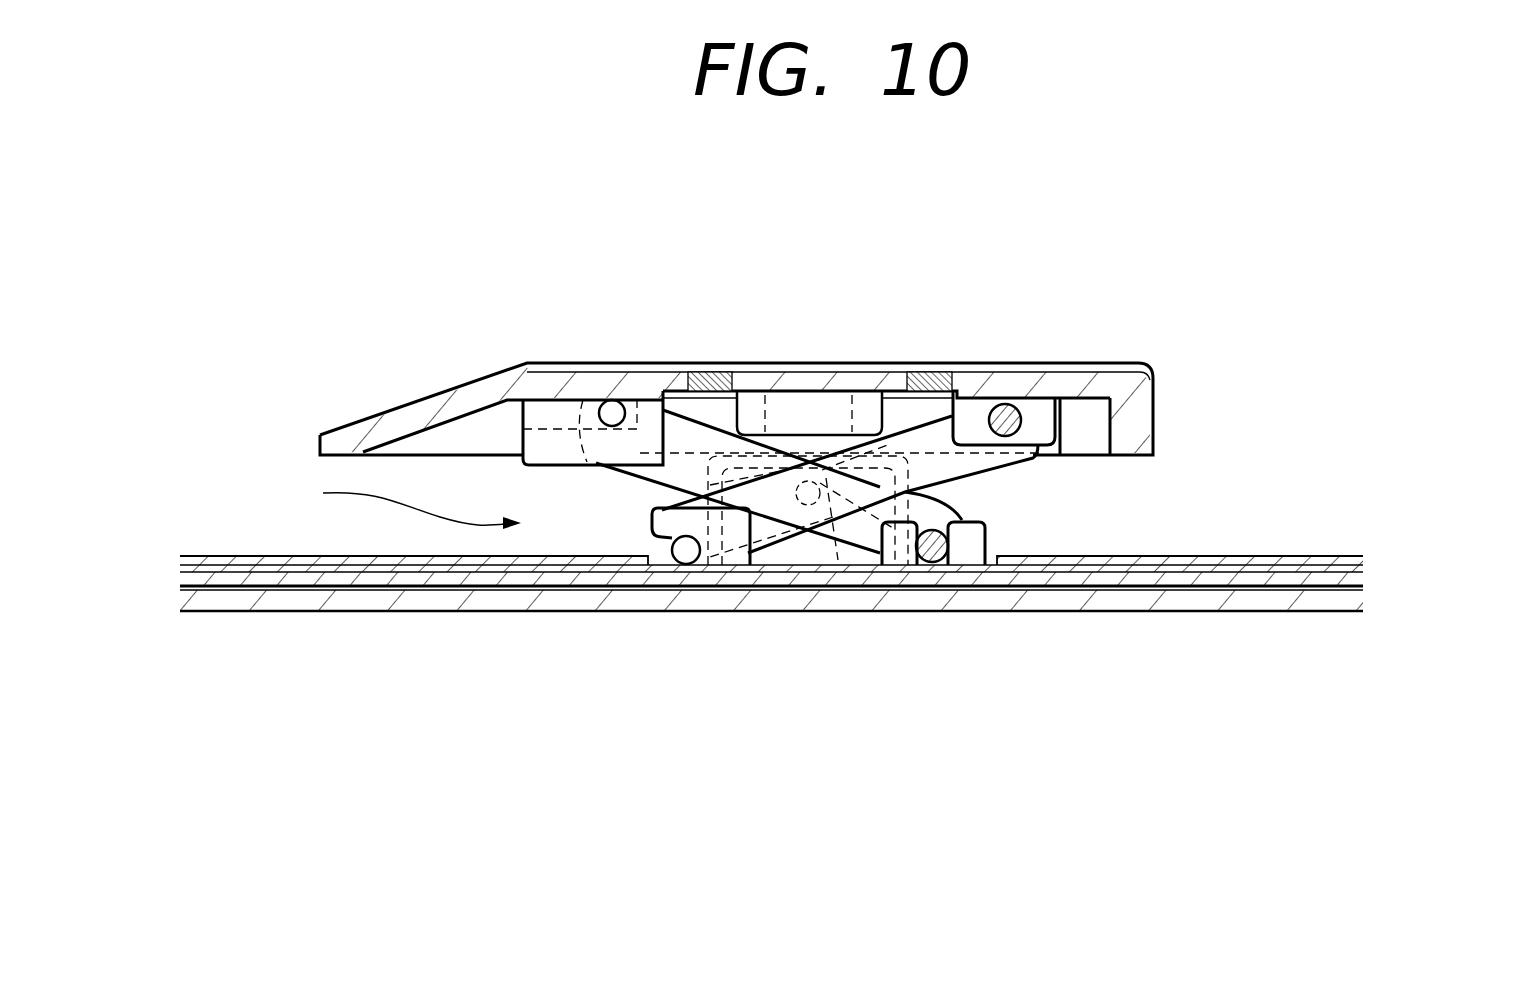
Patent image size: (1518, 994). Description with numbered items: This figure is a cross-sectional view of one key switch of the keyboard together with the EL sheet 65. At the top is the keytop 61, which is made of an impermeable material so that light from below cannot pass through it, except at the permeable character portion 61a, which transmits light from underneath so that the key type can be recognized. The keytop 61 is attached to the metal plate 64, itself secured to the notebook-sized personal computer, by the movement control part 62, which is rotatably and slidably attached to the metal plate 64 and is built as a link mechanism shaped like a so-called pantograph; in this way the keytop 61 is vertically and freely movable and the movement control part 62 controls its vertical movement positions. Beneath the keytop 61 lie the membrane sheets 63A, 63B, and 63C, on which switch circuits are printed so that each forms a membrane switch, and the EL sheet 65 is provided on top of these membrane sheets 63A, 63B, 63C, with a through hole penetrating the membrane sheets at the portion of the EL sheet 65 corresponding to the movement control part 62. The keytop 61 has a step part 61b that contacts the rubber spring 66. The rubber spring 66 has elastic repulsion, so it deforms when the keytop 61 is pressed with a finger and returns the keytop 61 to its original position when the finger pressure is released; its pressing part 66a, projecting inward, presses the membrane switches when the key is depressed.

The keytop 61 is at (1090, 372).
The permeable character portion 61a is at (711, 372).
The step part 61b is at (891, 394).
The movement control part 62 is at (404, 505).
The membrane sheet 63A is at (1363, 568).
The membrane sheet 63B is at (1360, 577).
The membrane sheet 63C is at (1360, 586).
The metal plate 64 is at (1337, 612).
The EL sheet 65 is at (1224, 555).
The rubber spring 66 is at (935, 478).
The pressing part 66a is at (838, 560).